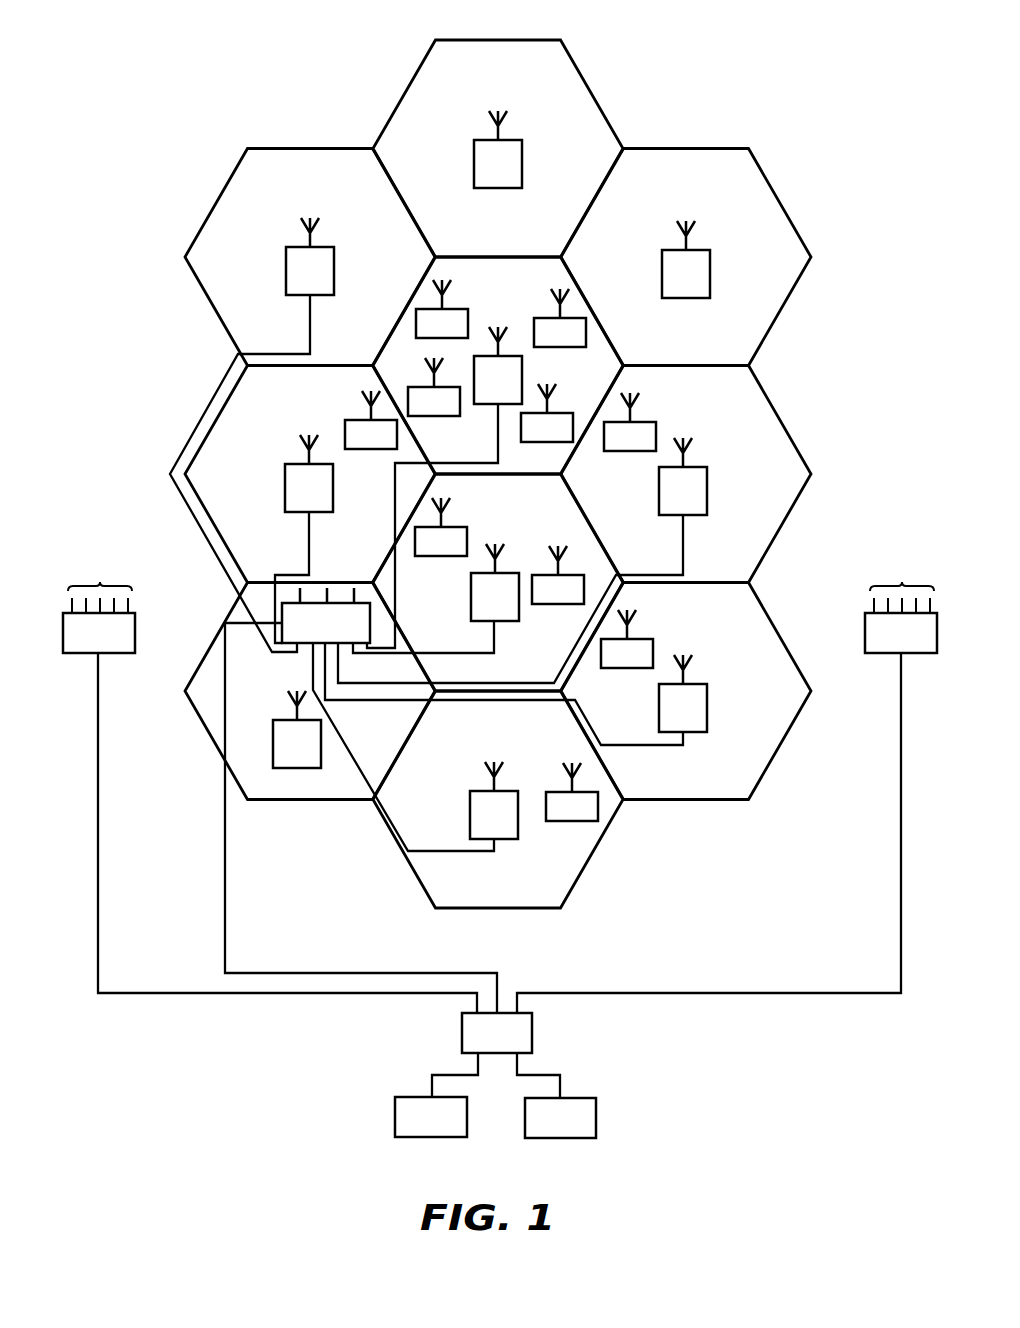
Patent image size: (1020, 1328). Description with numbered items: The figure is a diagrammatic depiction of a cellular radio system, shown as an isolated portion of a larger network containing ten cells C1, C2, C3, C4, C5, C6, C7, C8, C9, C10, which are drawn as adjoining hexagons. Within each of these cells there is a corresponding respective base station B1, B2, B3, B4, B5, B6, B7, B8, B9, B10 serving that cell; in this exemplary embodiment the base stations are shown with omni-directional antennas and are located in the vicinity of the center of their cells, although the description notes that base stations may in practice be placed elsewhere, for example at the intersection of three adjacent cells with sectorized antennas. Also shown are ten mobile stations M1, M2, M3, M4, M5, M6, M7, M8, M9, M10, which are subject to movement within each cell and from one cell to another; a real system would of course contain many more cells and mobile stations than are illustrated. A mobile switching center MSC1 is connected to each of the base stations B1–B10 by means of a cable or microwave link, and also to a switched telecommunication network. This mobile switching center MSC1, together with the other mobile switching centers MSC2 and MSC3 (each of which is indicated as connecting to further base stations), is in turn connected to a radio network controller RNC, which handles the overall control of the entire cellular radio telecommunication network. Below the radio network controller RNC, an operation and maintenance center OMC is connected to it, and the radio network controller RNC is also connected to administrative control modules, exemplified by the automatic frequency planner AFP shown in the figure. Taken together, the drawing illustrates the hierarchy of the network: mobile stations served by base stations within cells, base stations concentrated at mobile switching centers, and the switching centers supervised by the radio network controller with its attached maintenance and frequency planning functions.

The base station B1 is at (498, 365).
The base station B2 is at (686, 259).
The base station B3 is at (683, 476).
The base station B4 is at (495, 582).
The base station B5 is at (309, 473).
The base station B6 is at (310, 256).
The base station B7 is at (498, 149).
The base station B8 is at (683, 693).
The base station B9 is at (494, 800).
The base station B10 is at (297, 729).
The mobile station M1 is at (627, 639).
The mobile station M2 is at (371, 420).
The mobile station M3 is at (434, 387).
The mobile station M4 is at (560, 318).
The mobile station M5 is at (630, 422).
The mobile station M6 is at (442, 309).
The mobile station M7 is at (547, 413).
The mobile station M8 is at (558, 575).
The mobile station M9 is at (441, 527).
The mobile station M10 is at (572, 792).
The cell C1 is at (465, 456).
The cell C2 is at (659, 349).
The cell C3 is at (658, 566).
The cell C4 is at (470, 682).
The cell C5 is at (276, 566).
The cell C6 is at (277, 344).
The cell C7 is at (476, 240).
The cell C8 is at (656, 797).
The cell C9 is at (467, 904).
The cell C10 is at (286, 796).
The mobile switching center MSC1 is at (326, 615).
The mobile switching center MSC2 is at (100, 589).
The mobile switching center MSC3 is at (900, 589).
The radio network controller RNC is at (497, 1033).
The automatic frequency planner AFP is at (431, 1117).
The operation and maintenance center OMC is at (560, 1118).